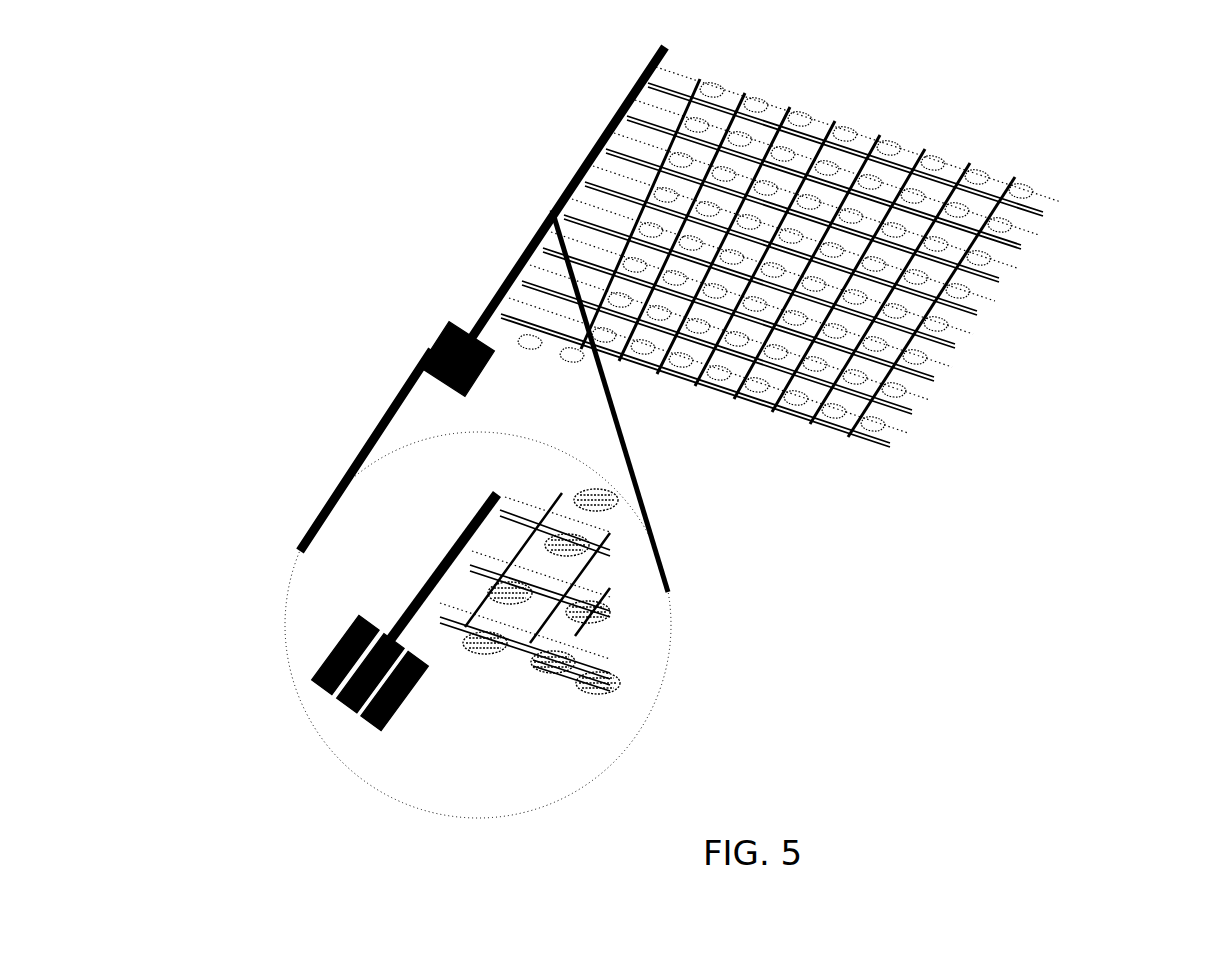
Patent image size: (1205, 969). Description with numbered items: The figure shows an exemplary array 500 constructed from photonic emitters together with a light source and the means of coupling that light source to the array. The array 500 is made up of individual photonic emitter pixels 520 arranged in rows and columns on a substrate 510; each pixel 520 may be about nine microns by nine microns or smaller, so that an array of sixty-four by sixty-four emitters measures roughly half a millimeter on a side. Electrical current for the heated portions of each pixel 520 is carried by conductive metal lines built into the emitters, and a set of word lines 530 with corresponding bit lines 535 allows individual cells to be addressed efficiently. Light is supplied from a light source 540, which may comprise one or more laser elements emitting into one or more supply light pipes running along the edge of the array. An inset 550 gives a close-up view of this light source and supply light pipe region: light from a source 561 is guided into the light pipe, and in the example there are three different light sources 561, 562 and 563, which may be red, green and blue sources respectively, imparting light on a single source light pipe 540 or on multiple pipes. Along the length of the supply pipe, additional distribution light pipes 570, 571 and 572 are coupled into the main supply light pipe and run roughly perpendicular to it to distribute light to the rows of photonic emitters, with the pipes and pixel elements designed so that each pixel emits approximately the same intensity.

The array 500 is at (388, 118).
The pixel array substrate 510 is at (1106, 338).
The photonic emitter pixel 520 is at (843, 438).
The word lines 530 is at (895, 449).
The bit lines 535 is at (1000, 196).
The light source 540 is at (508, 272).
The inset 550 is at (289, 522).
The light source 561 is at (332, 690).
The light source 562 is at (350, 708).
The light source 563 is at (375, 725).
The light pipe 570 is at (440, 597).
The light pipe 571 is at (477, 537).
The light pipe 572 is at (507, 502).